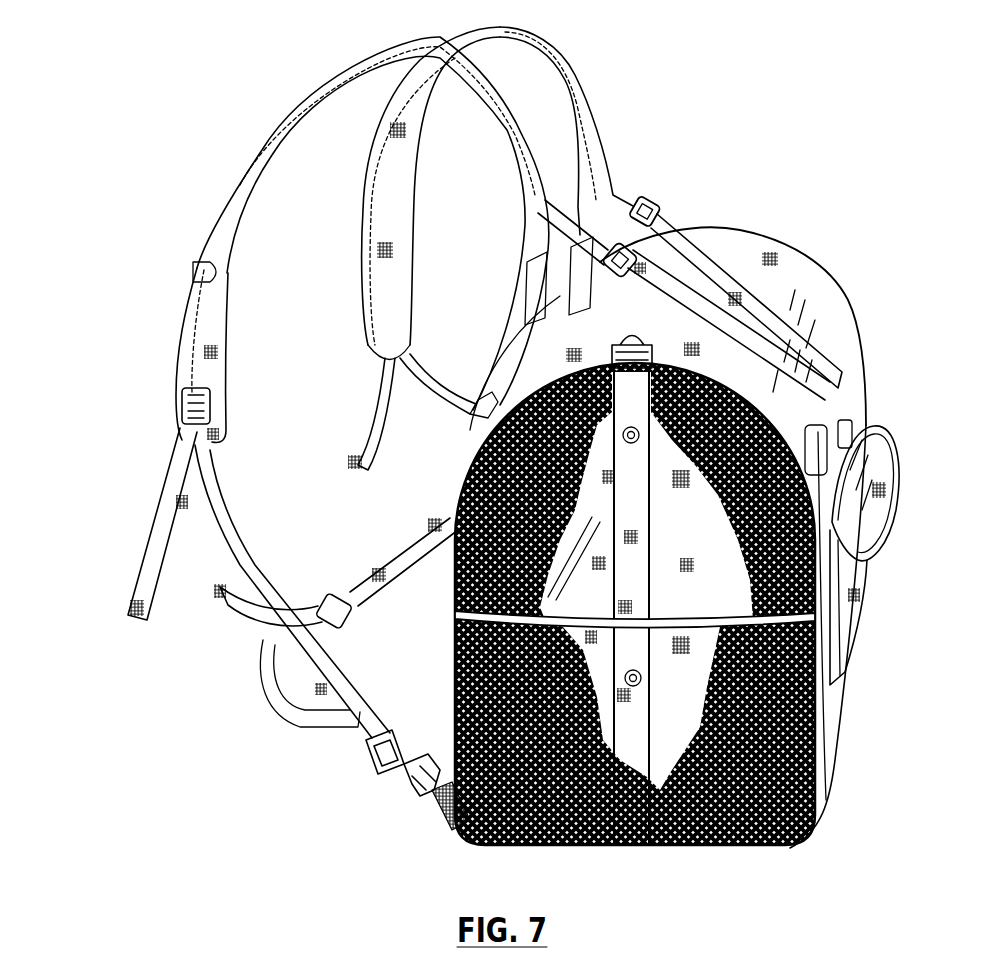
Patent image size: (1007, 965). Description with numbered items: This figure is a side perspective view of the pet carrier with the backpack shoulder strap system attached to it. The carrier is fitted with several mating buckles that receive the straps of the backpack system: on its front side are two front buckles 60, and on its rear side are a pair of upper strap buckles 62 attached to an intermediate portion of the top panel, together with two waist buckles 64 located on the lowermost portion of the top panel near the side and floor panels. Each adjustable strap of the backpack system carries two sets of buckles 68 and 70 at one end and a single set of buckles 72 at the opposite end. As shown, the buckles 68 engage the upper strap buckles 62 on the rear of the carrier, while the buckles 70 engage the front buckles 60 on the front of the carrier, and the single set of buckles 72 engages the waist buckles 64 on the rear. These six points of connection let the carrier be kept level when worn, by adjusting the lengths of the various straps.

The front buckles 60 is at (856, 403).
The upper strap buckles 62 is at (494, 396).
The waist buckles 64 is at (416, 788).
The buckles 68 is at (640, 204).
The buckles 70 is at (822, 413).
The single set of buckles 72 is at (381, 766).